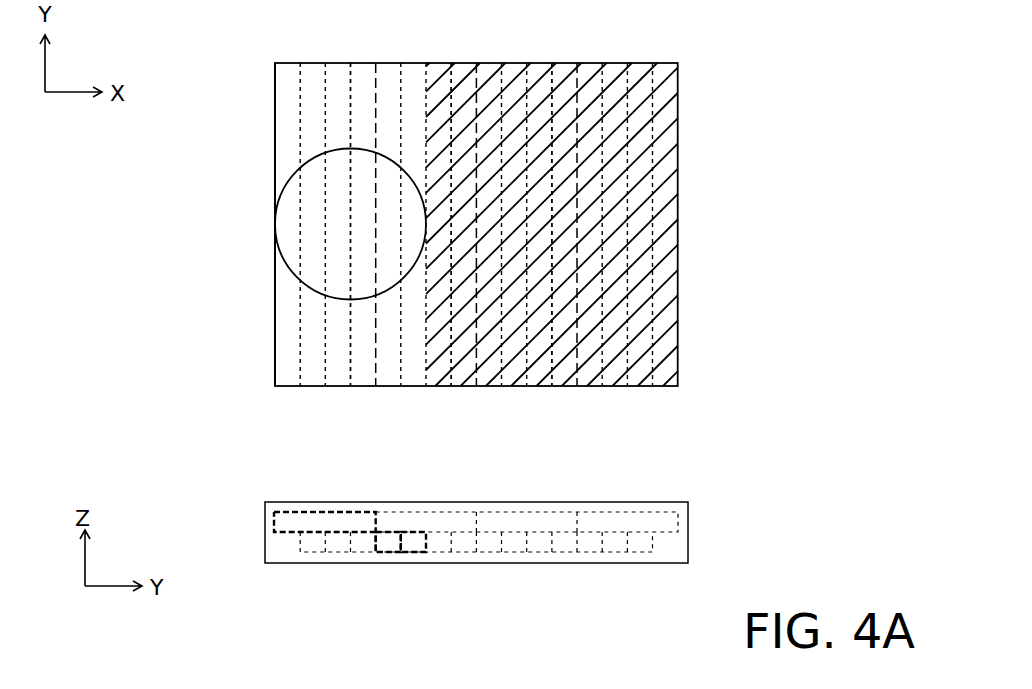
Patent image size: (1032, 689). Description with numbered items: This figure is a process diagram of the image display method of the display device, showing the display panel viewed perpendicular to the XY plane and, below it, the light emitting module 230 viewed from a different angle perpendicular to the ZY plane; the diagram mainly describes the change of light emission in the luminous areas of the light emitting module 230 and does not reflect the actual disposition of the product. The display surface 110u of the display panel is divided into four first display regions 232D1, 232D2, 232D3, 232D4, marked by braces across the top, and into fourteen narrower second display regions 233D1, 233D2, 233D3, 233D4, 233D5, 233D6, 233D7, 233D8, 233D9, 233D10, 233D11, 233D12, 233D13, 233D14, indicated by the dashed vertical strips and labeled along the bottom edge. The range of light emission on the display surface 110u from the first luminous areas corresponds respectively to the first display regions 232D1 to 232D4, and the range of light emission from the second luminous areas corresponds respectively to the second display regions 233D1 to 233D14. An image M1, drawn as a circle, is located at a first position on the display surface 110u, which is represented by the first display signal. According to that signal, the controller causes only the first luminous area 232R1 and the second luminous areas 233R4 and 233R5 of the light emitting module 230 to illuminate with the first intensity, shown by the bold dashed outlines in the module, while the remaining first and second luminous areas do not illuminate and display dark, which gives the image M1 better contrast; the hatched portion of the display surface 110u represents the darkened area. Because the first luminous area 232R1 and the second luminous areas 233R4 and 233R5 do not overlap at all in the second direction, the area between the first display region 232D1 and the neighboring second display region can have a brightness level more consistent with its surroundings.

The display surface 110u is at (275, 130).
The image M1 is at (298, 170).
The first display region 232D1 is at (376, 58).
The first display region 232D2 is at (376, 58).
The first display region 232D3 is at (476, 58).
The first display region 232D4 is at (678, 58).
The second display region 233D1 is at (313, 386).
The second display region 233D2 is at (338, 386).
The second display region 233D3 is at (363, 386).
The second display region 233D4 is at (388, 386).
The second display region 233D5 is at (413, 386).
The second display region 233D6 is at (439, 386).
The second display region 233D7 is at (464, 386).
The second display region 233D8 is at (489, 386).
The second display region 233D9 is at (514, 386).
The second display region 233D10 is at (540, 386).
The second display region 233D11 is at (565, 386).
The second display region 233D12 is at (590, 386).
The second display region 233D13 is at (615, 386).
The second display region 233D14 is at (640, 386).
The light emitting module 230 is at (178, 471).
The first luminous area 232R1 is at (324, 512).
The second luminous area 233R4 is at (387, 552).
The second luminous area 233R5 is at (412, 552).